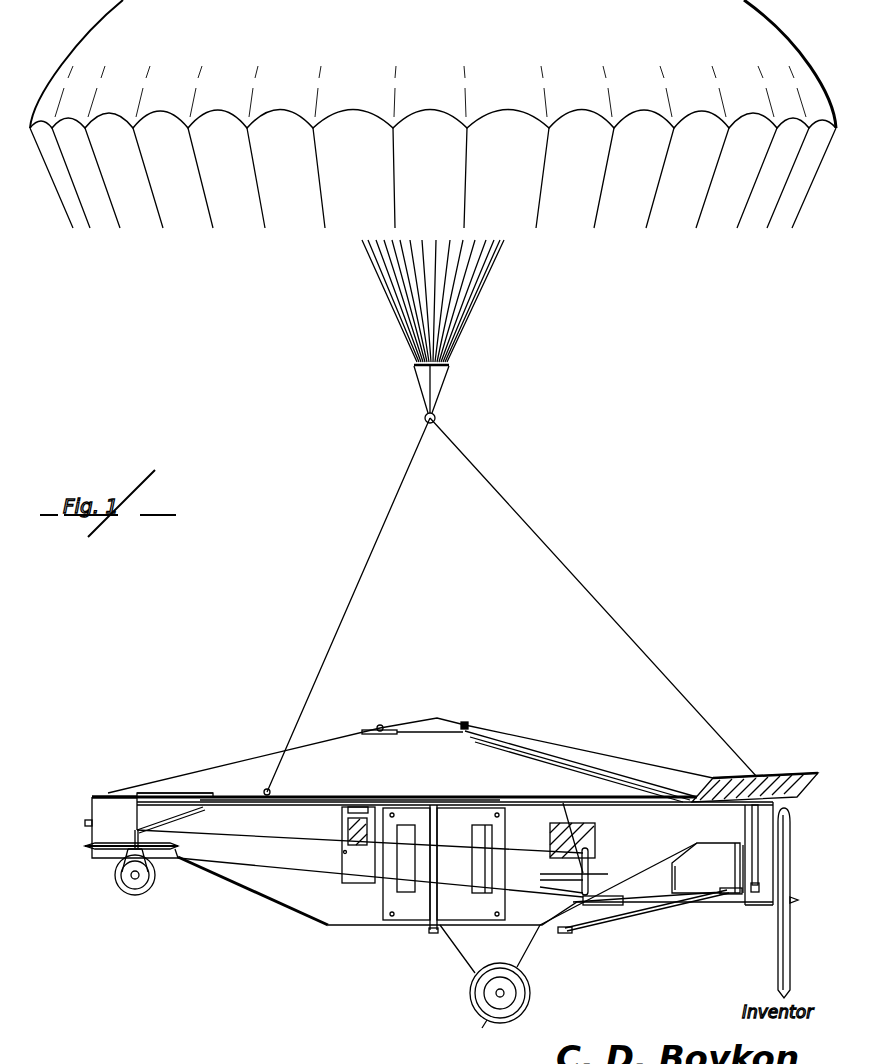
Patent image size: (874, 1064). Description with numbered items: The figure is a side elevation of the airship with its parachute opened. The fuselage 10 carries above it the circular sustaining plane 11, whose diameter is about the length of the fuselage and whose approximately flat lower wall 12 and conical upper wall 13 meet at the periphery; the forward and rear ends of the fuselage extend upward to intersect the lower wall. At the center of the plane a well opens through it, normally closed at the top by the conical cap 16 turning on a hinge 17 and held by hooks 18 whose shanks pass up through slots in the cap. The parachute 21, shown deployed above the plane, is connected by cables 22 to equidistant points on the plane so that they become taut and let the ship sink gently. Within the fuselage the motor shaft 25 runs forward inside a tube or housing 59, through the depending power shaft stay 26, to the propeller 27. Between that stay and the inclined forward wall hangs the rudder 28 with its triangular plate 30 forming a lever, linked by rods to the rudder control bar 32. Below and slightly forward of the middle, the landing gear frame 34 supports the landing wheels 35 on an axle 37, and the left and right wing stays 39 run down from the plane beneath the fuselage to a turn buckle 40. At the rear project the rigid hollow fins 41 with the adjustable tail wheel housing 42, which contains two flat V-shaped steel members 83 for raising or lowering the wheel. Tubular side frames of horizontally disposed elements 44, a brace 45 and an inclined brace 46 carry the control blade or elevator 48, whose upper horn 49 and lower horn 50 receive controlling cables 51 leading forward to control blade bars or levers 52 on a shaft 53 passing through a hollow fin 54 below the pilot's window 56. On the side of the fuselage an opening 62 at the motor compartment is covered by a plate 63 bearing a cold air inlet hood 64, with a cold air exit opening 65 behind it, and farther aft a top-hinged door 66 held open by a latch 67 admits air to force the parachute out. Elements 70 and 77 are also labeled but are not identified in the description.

The fuselage 10 is at (330, 935).
The sustaining plane 11 is at (318, 758).
The lower wall 12 is at (310, 802).
The upper wall 13 is at (587, 760).
The cap 16 is at (437, 717).
The hinge 17 is at (380, 726).
The hooks 18 is at (469, 724).
The parachute 21 is at (576, 95).
The cables 22 is at (347, 608).
The motor shaft 25 is at (722, 895).
The power shaft stay 26 is at (767, 863).
The propeller 27 is at (788, 940).
The rudder 28 is at (707, 850).
The triangular plate 30 is at (687, 878).
The rudder control bar 32 is at (562, 934).
The landing gear frame 34 is at (470, 970).
The landing wheels 35 is at (487, 1025).
The axle 37 is at (505, 993).
The wing stays 39 is at (438, 902).
The turn buckle 40 is at (432, 933).
The rigid hollow fins 41 is at (178, 860).
The tail wheel housing 42 is at (95, 820).
The horizontally disposed elements 44 is at (178, 806).
The brace 45 is at (147, 792).
The inclined brace 46 is at (196, 815).
The control blade or elevator 48 is at (85, 846).
The upper horn 49 is at (135, 843).
The lower horn 50 is at (118, 872).
The controlling cables 51 is at (275, 838).
The control blade bars or levers 52 is at (590, 862).
The shaft 53 is at (558, 870).
The hollow fin 54 is at (607, 877).
The window 56 is at (596, 822).
The tube or housing 59 is at (613, 906).
The opening 62 is at (385, 907).
The plate 63 is at (420, 910).
The cold air inlet hood 64 is at (478, 832).
The cold air exit opening 65 is at (412, 860).
The door 66 is at (352, 868).
The latch 67 is at (342, 890).
The deck edge 70 is at (92, 798).
The tail plate 77 is at (805, 775).
The flat V-shaped steel members 83 is at (145, 893).